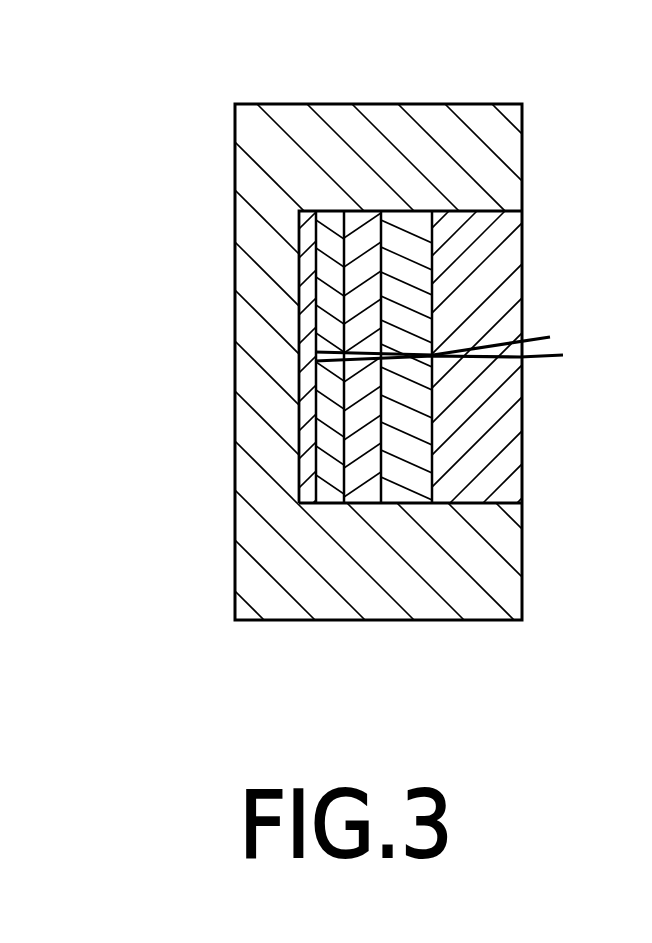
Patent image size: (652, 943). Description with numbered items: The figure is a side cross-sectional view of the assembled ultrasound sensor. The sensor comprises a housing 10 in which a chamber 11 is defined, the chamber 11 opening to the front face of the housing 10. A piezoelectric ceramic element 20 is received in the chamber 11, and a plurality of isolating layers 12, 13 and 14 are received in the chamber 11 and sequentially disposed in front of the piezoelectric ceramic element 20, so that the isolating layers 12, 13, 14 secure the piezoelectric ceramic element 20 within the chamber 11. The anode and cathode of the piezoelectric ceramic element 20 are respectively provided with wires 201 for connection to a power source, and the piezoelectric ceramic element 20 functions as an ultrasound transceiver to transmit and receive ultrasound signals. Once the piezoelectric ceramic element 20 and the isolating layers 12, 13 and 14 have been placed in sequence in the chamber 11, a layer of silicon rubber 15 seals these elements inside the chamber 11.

The housing 10 is at (378, 115).
The chamber 11 is at (450, 211).
The isolating layer 12 is at (320, 487).
The isolating layer 13 is at (355, 490).
The isolating layer 14 is at (400, 460).
The layer of silicon rubber 15 is at (498, 278).
The piezoelectric ceramic element 20 is at (313, 303).
The wires 201 is at (563, 355).